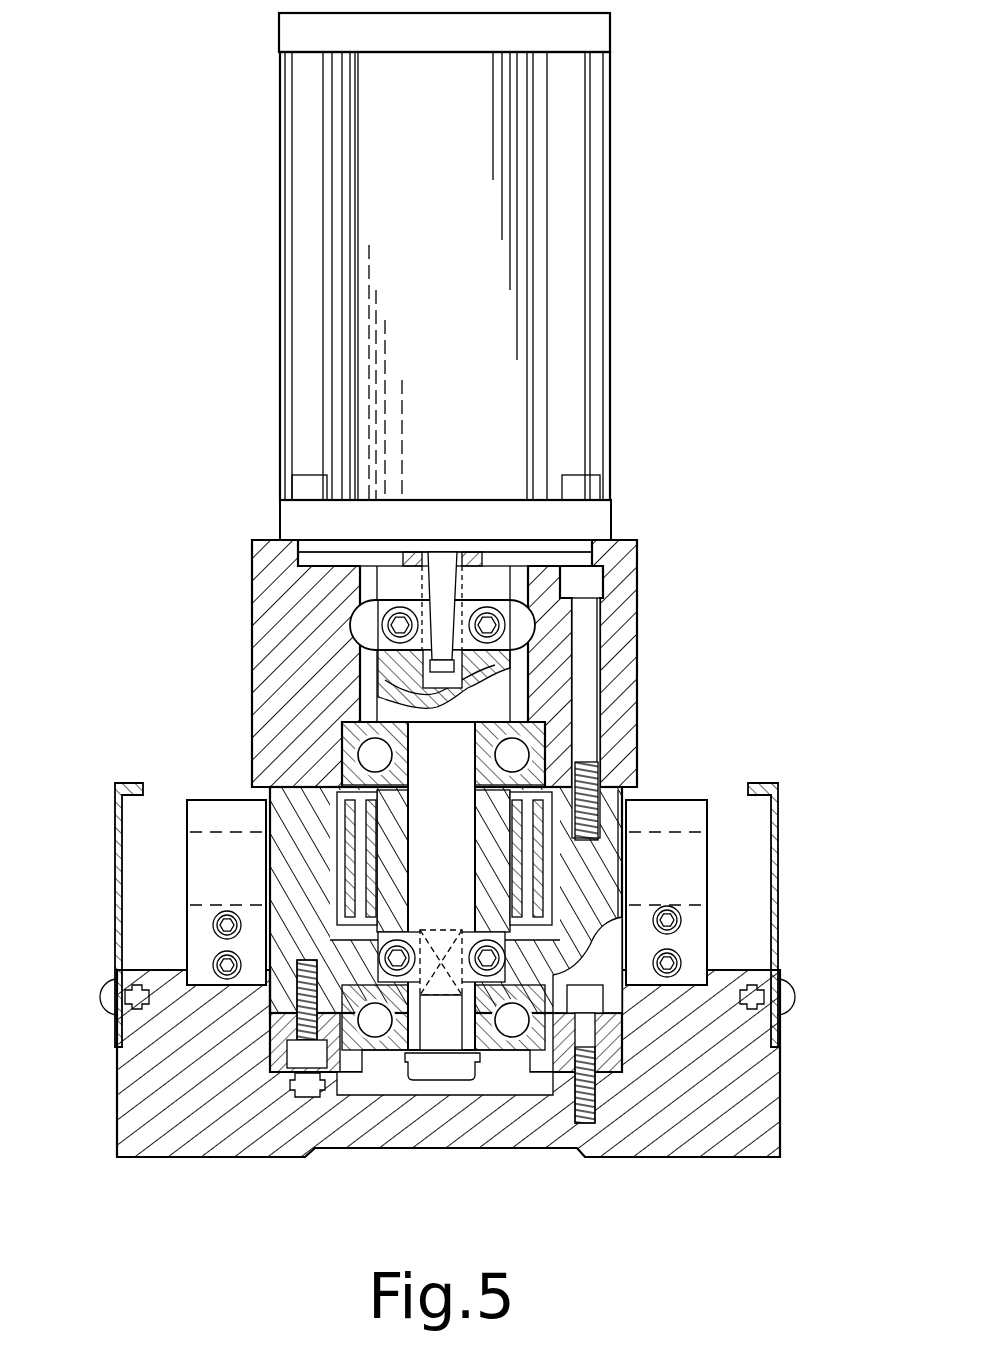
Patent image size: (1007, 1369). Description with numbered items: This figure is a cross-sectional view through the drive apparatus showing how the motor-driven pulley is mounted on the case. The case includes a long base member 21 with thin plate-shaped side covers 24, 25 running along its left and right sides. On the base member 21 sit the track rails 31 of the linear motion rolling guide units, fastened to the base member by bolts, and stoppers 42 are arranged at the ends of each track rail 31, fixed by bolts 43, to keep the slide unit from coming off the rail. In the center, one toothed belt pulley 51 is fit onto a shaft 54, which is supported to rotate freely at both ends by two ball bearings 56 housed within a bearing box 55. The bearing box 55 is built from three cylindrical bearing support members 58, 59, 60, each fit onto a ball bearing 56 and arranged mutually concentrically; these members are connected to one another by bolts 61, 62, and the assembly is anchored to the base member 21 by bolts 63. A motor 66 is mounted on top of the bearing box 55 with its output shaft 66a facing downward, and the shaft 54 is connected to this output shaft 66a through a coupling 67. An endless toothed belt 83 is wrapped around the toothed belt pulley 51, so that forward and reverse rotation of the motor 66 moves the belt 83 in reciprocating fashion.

The base member 21 is at (200, 1150).
The side cover 24 is at (762, 788).
The side cover 25 is at (140, 783).
The track rail 31 is at (197, 943).
The stopper 42 is at (212, 862).
The bolt 43 is at (212, 927).
The toothed belt pulley 51 is at (428, 743).
The shaft 54 is at (385, 680).
The bearing box 55 is at (643, 618).
The ball bearing 56 is at (340, 737).
The bearing support member 58 is at (630, 665).
The bearing support member 59 is at (613, 812).
The bearing support member 60 is at (540, 1090).
The bolt 61 is at (588, 732).
The bolt 62 is at (312, 1100).
The bolt 63 is at (585, 1128).
The motor 66 is at (600, 270).
The output shaft 66a is at (470, 590).
The coupling 67 is at (352, 627).
The endless toothed belt 83 is at (350, 855).